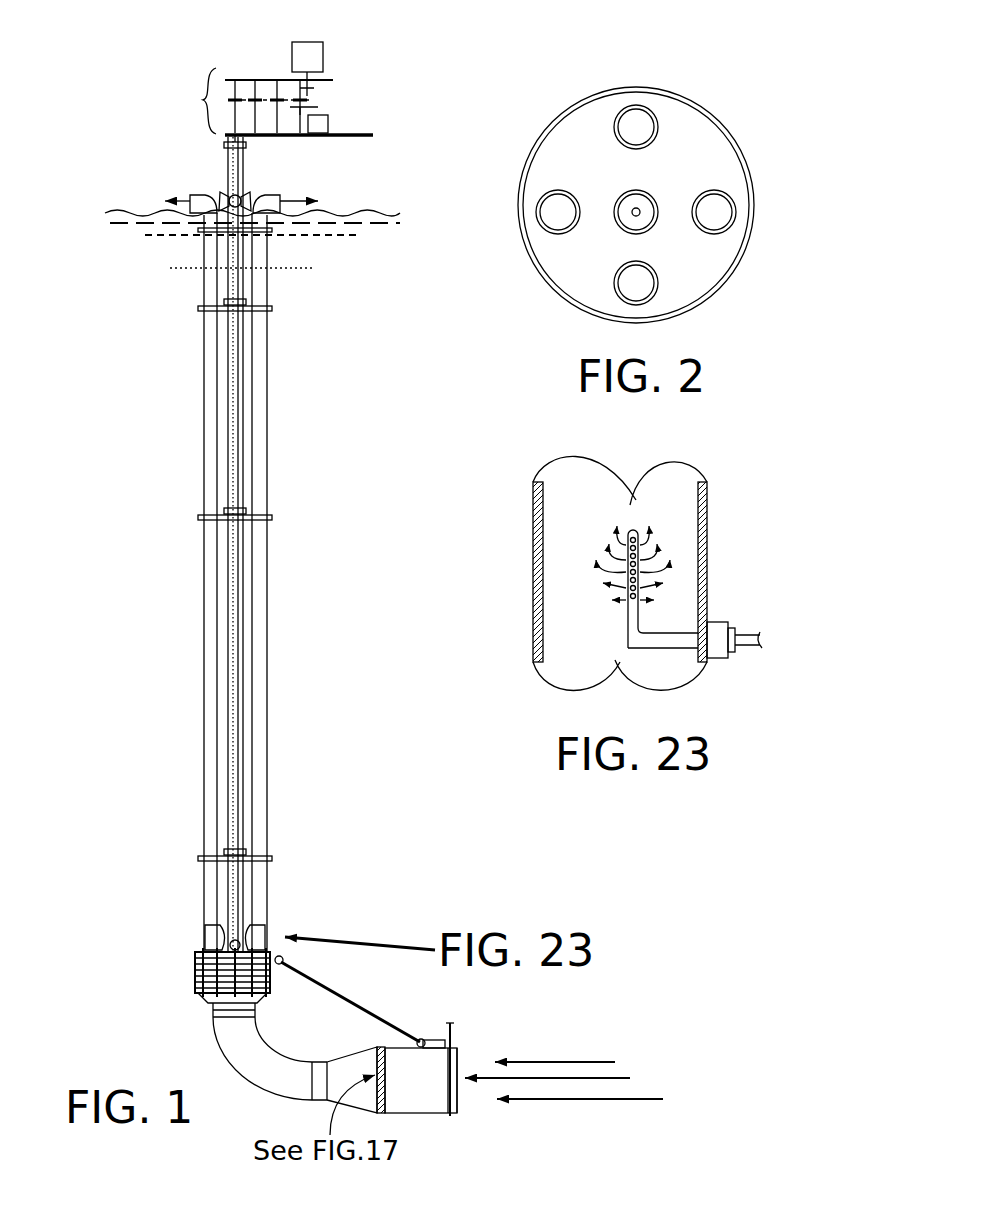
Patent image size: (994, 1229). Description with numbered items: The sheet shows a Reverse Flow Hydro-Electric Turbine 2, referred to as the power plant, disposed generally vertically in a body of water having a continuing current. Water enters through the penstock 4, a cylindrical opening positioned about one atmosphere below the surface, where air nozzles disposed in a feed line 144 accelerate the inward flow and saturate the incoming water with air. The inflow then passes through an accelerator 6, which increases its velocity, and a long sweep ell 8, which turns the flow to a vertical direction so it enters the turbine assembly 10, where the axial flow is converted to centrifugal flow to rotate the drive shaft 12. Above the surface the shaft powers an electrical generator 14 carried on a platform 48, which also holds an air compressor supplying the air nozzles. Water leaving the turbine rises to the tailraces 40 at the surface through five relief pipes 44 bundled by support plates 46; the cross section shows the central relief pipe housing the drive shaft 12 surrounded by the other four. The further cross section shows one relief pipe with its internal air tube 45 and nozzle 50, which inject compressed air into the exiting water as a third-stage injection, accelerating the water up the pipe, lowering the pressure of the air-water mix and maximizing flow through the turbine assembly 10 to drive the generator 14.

In FIG. 1, the Reverse Flow Hydro-Electric Turbine 2 is at (197, 368).
In FIG. 1, the penstock 4 is at (432, 1115).
In FIG. 1, the accelerator 6 is at (350, 1058).
In FIG. 1, the long sweep ell 8 is at (222, 1048).
In FIG. 1, the turbine assembly 10 is at (190, 975).
In FIG. 1, the drive shaft 12 is at (237, 622).
In FIG. 2, the drive shaft 12 is at (640, 210).
In FIG. 1, the electrical generator 14 is at (323, 56).
In FIG. 1, the tailraces 40 is at (185, 195).
In FIG. 1, the relief pipes 44 is at (267, 598).
In FIG. 2, the relief pipes 44 is at (637, 105).
In FIG. 23, the internal air tube 45 is at (752, 633).
In FIG. 1, the support plates 46 is at (272, 308).
In FIG. 2, the support plates 46 is at (745, 158).
In FIG. 1, the platform 48 is at (372, 133).
In FIG. 23, the exit air nozzles 50 is at (640, 605).
In FIG. 1, the feed line 144 is at (452, 1040).